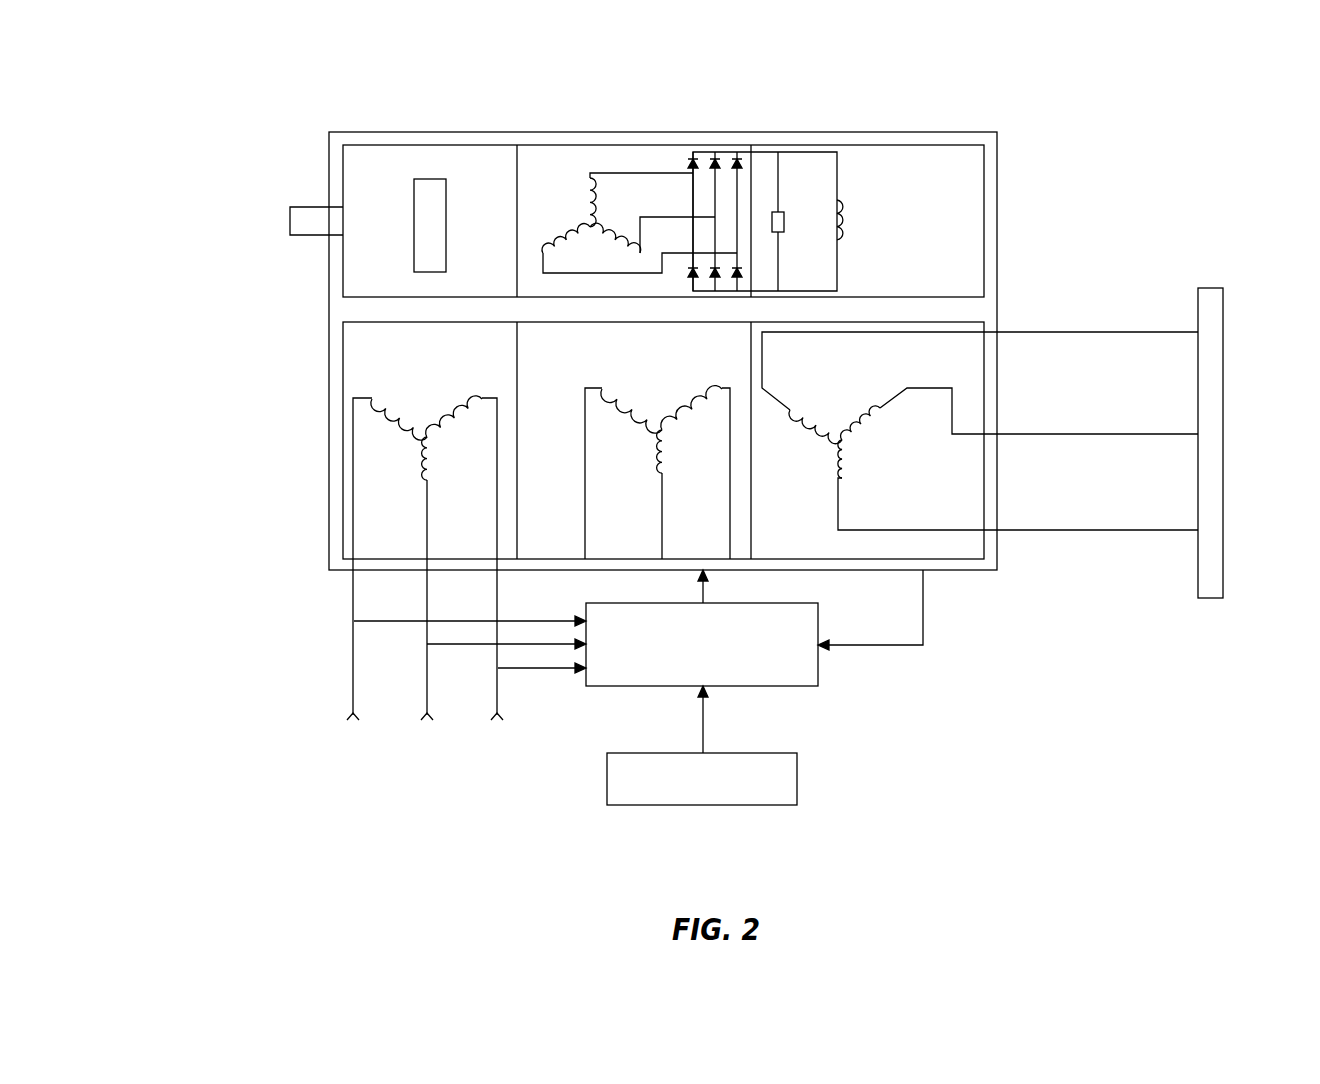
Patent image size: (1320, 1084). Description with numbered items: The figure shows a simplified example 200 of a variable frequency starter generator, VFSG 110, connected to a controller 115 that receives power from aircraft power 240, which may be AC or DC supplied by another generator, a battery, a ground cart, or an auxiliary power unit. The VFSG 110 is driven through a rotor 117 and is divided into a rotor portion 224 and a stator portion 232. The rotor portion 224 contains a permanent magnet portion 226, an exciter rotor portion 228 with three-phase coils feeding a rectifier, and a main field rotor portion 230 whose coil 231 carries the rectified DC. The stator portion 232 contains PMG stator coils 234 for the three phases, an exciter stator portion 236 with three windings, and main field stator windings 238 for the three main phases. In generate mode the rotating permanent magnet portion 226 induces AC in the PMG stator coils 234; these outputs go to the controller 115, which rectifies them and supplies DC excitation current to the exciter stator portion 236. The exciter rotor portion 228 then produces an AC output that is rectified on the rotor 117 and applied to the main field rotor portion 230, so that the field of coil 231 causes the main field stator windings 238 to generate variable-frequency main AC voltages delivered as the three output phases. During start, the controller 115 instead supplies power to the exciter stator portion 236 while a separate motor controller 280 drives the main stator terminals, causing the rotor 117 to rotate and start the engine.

The simplified example 200 is at (190, 888).
The VFSG 110 is at (316, 88).
The rotor 117 is at (290, 220).
The permanent magnet portion 226 is at (430, 178).
The exciter rotor portion 228 is at (581, 205).
The rotor portion 224 is at (731, 132).
The main field rotor portion 230 is at (913, 132).
The coil 231 is at (858, 227).
The stator portion 232 is at (342, 505).
The PMG stator coils 234 is at (370, 389).
The exciter stator portion 236 is at (579, 403).
The main field stator windings 238 is at (855, 442).
The motor controller 280 is at (1224, 418).
The controller 115 is at (819, 660).
The aircraft power 240 is at (798, 778).